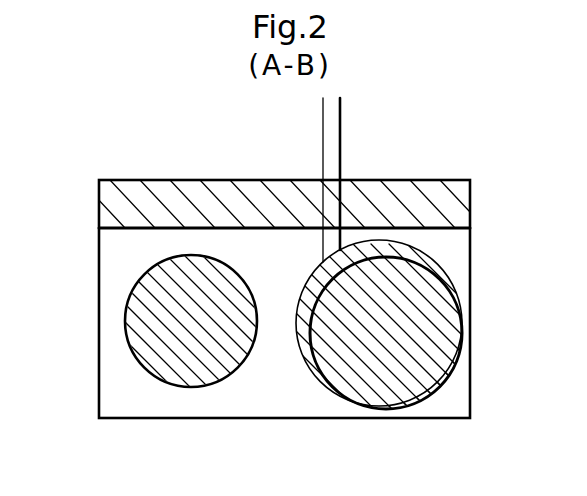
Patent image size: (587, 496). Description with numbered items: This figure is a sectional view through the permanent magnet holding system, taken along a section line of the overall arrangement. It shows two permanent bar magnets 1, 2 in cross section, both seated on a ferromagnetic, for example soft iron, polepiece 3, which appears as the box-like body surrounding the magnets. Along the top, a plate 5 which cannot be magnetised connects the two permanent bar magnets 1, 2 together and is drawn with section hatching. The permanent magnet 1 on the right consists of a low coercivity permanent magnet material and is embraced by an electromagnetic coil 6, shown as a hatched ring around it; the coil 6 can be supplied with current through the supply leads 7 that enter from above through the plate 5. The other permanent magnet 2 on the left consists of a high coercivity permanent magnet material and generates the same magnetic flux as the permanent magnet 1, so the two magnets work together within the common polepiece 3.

The permanent bar magnet 1 is at (346, 368).
The permanent bar magnet 2 is at (212, 363).
The polepiece 3 is at (130, 405).
The plate 5 is at (168, 193).
The electromagnetic coil 6 is at (422, 388).
The supply leads 7 is at (340, 132).